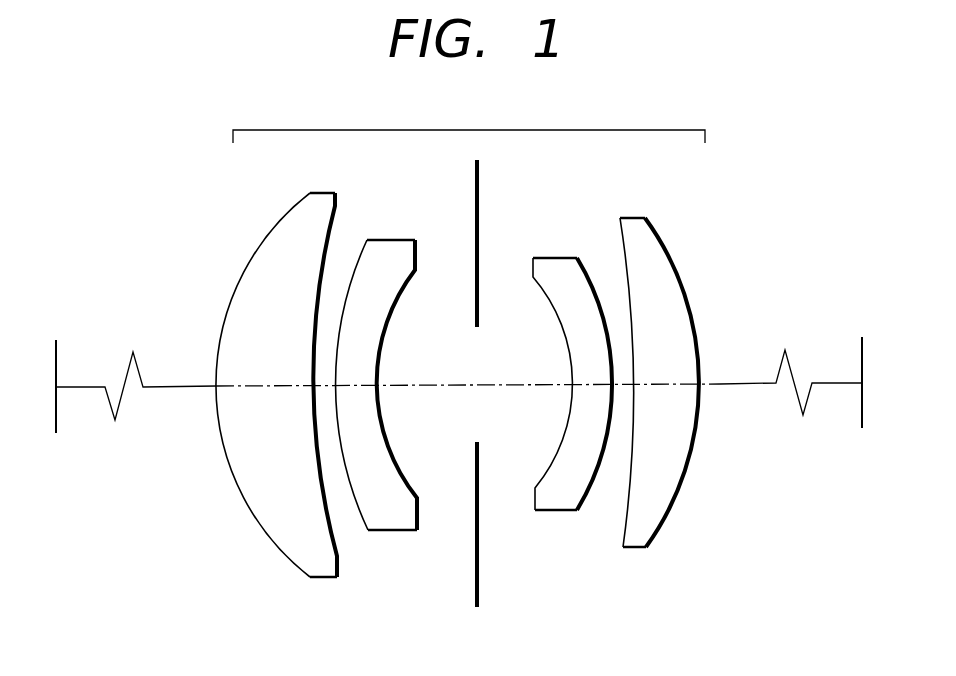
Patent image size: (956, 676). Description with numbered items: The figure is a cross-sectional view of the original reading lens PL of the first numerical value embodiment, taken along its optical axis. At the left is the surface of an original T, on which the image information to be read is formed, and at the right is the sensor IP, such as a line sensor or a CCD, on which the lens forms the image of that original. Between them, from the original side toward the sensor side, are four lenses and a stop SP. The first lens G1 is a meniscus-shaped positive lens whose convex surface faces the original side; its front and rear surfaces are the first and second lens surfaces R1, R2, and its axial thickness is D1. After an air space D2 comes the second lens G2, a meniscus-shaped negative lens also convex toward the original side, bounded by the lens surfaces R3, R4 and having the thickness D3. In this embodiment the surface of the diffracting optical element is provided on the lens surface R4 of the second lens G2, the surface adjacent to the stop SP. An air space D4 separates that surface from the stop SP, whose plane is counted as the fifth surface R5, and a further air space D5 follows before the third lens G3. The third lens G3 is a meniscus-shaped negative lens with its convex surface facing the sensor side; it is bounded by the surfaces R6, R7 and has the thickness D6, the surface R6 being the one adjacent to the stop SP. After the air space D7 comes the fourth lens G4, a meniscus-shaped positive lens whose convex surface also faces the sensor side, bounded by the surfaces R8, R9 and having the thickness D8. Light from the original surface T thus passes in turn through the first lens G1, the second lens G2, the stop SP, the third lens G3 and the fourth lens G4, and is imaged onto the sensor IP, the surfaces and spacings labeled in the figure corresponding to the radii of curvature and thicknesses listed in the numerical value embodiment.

The original reading lens PL is at (469, 121).
The first lens G1 is at (304, 374).
The second lens G2 is at (388, 382).
The third lens G3 is at (557, 386).
The fourth lens G4 is at (648, 378).
The stop SP is at (481, 189).
The lens surface R1 is at (270, 538).
The lens surface R2 is at (337, 537).
The lens surface R3 is at (353, 503).
The lens surface R4 is at (400, 472).
The stop surface R5 is at (529, 375).
The lens surface R6 is at (549, 468).
The lens surface R7 is at (590, 496).
The lens surface R8 is at (623, 508).
The lens surface R9 is at (668, 518).
The thickness D1 is at (260, 384).
The air space D2 is at (318, 384).
The thickness D3 is at (358, 384).
The air space D4 is at (423, 384).
The air space D5 is at (523, 384).
The thickness D6 is at (591, 384).
The air space D7 is at (627, 384).
The thickness D8 is at (674, 384).
The surface of an original T is at (58, 360).
The sensor IP is at (860, 356).